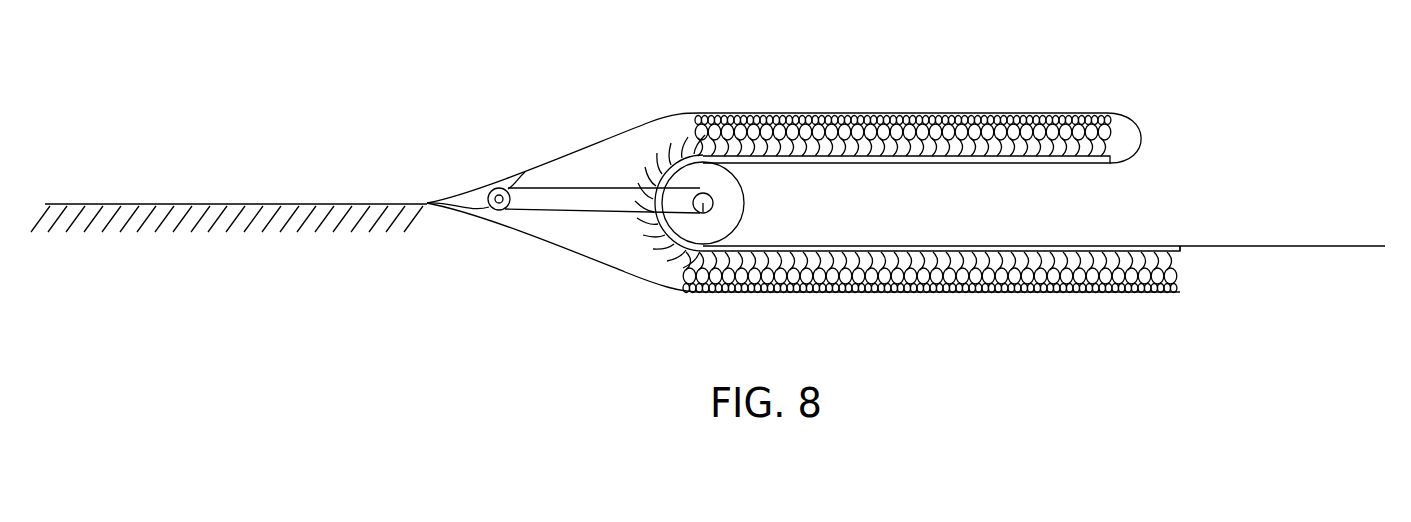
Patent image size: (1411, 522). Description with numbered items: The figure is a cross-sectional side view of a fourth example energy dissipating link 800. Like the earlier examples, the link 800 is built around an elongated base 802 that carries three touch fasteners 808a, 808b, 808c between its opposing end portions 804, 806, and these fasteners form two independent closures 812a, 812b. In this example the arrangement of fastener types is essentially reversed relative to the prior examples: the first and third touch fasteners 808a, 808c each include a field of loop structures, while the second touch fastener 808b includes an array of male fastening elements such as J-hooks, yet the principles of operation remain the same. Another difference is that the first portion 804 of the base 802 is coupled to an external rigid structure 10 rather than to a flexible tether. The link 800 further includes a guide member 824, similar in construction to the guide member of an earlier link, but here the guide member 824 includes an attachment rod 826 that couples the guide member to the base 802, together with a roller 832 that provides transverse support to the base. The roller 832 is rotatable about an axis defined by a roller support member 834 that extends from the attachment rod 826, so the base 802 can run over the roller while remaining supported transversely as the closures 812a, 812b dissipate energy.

The external rigid structure 10 is at (140, 204).
The energy dissipating link 800 is at (328, 62).
The elongated base 802 is at (1204, 235).
The first portion 804 is at (438, 199).
The end portion 806 is at (1300, 244).
The first touch fastener 808a is at (1047, 113).
The second touch fastener 808b is at (1035, 165).
The third touch fastener 808c is at (867, 293).
The first closure 812a is at (946, 303).
The second closure 812b is at (853, 98).
The guide member 824 is at (580, 222).
The attachment rod 826 is at (496, 188).
The roller 832 is at (744, 205).
The roller support member 834 is at (700, 196).